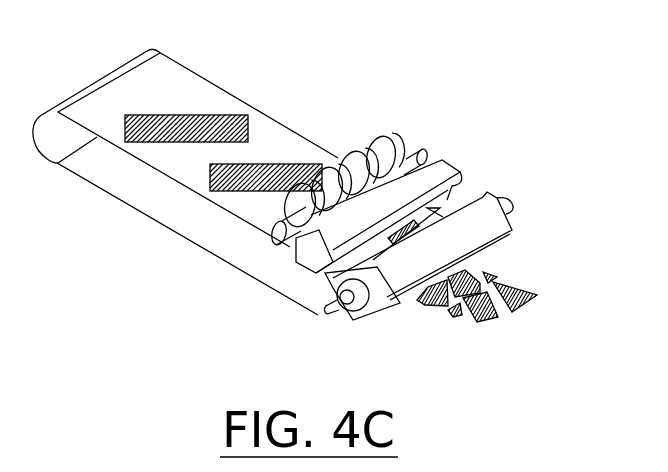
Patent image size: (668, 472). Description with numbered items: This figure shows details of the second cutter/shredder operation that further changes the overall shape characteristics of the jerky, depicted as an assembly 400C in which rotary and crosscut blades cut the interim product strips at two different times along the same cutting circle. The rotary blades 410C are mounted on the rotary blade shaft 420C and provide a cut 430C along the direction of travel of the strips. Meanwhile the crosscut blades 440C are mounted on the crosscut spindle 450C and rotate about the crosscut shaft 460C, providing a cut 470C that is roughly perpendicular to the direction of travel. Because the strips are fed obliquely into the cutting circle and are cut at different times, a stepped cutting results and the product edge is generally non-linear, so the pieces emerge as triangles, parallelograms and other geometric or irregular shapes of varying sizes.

The housing 400C is at (210, 193).
The rotary blades 410C is at (372, 140).
The rotary blade shaft 420C is at (417, 142).
The cut 430C is at (498, 306).
The crosscut blades 440C is at (510, 228).
The crosscut spindle 450C is at (488, 183).
The crosscut shaft 460C is at (497, 198).
The cut 470C is at (458, 306).